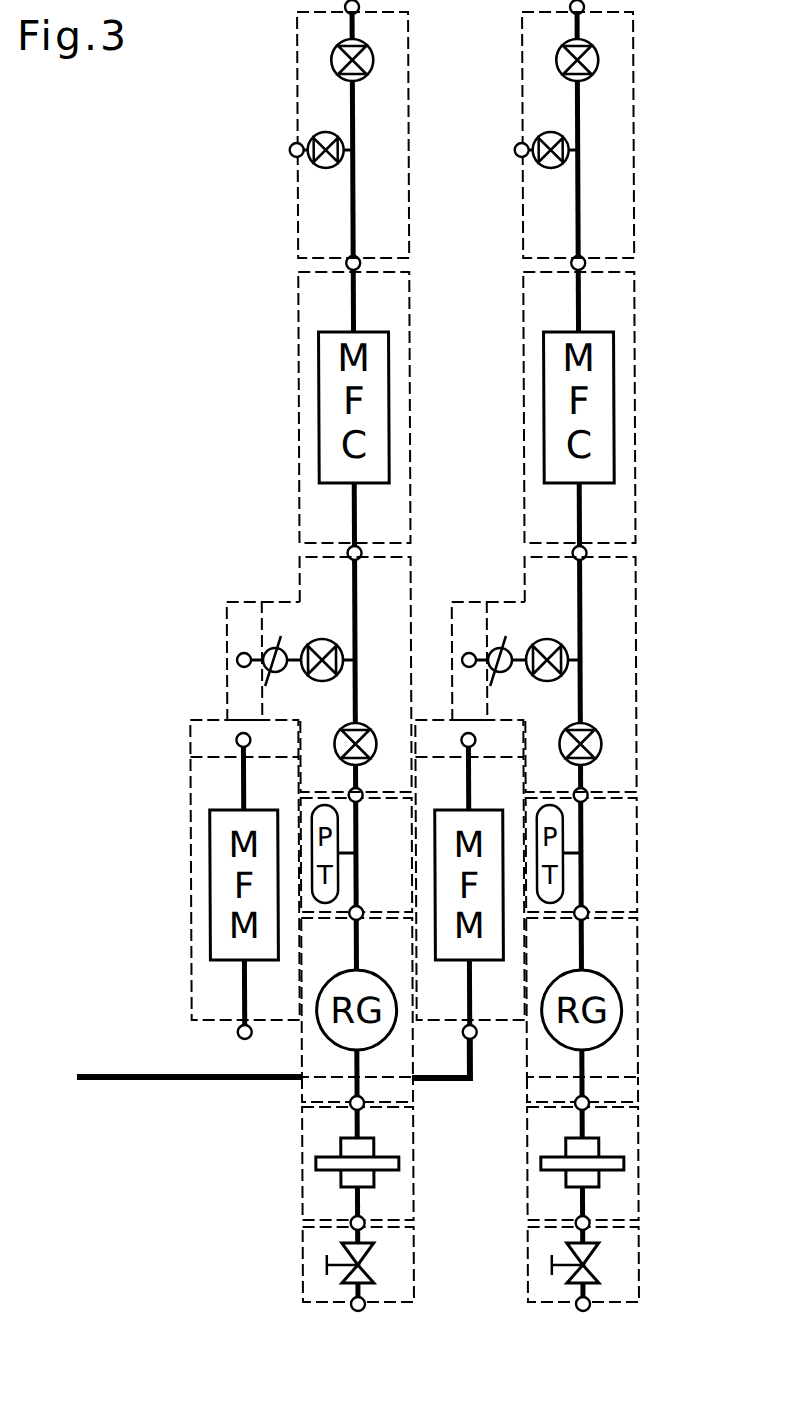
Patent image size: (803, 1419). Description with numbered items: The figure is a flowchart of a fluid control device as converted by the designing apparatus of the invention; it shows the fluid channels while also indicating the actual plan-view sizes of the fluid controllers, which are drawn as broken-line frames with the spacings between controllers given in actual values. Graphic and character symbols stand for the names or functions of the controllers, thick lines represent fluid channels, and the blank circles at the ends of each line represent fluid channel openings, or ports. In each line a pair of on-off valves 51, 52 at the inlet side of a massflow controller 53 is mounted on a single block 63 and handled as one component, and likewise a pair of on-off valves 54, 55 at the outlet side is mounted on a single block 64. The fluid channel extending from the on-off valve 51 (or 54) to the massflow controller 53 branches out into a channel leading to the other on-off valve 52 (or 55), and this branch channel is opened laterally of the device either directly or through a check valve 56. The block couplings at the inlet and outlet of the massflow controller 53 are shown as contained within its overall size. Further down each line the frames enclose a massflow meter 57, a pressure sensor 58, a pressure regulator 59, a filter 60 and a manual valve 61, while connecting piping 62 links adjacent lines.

The on-off valve 51 is at (373, 58).
The on-off valve 52 is at (312, 166).
The massflow controller 53 is at (317, 402).
The on-off valve 54 is at (338, 728).
The on-off valve 55 is at (326, 641).
The check valve 56 is at (280, 645).
The massflow meter 57 is at (206, 887).
The pressure sensor 58 is at (308, 810).
The pressure regulator 59 is at (332, 1044).
The filter 60 is at (394, 1163).
The manual valve 61 is at (369, 1268).
The connecting piping 62 is at (253, 1083).
The block 63 is at (408, 147).
The block 64 is at (297, 558).